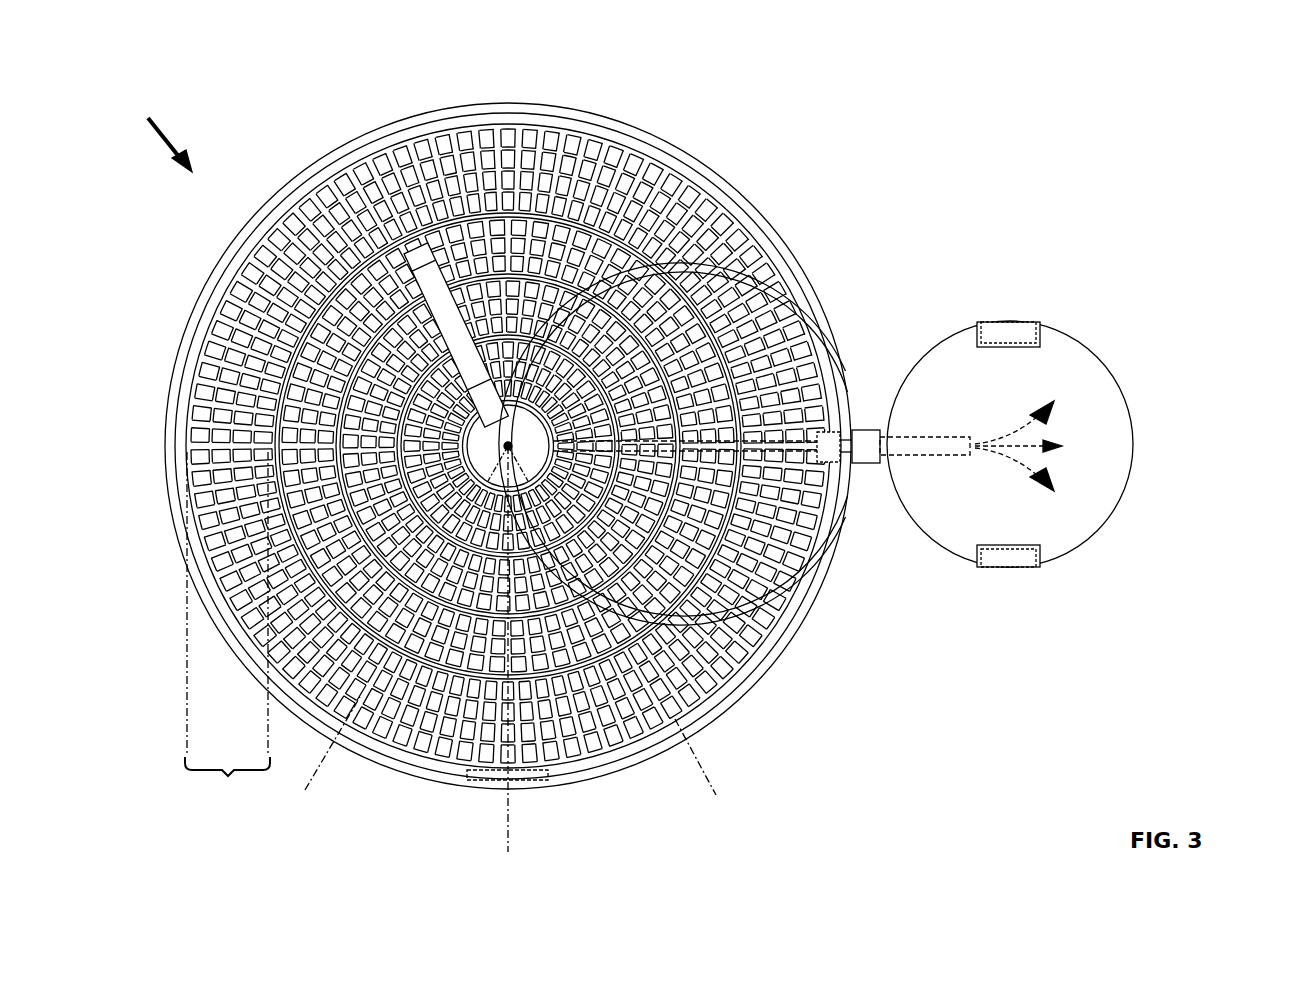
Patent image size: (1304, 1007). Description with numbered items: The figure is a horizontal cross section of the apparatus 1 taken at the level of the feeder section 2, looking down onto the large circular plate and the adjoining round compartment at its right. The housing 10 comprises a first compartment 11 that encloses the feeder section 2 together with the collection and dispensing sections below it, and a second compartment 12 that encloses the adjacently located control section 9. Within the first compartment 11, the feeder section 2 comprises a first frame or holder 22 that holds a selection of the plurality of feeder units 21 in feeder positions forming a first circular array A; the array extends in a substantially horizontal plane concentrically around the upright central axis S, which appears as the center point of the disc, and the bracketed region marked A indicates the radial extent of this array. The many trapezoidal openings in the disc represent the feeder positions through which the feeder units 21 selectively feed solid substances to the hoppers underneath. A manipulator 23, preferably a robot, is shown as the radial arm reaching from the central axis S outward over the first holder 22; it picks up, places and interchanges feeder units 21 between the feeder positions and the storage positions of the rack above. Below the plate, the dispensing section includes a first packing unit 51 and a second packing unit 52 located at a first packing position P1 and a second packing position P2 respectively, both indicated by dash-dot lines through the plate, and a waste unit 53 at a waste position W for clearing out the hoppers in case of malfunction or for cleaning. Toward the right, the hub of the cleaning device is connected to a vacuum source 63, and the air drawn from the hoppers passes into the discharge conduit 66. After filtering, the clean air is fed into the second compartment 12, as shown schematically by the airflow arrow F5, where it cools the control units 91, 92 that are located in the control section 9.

The apparatus 1 is at (163, 125).
The feeder section 2 is at (664, 314).
The control section 9 is at (1167, 451).
The housing 10 is at (318, 162).
The first compartment 11 is at (207, 288).
The second compartment 12 is at (968, 264).
The feeder units 21 is at (760, 238).
The first holder 22 is at (690, 208).
The manipulator 23 is at (440, 290).
The first packing unit 51 is at (593, 623).
The second packing unit 52 is at (485, 778).
The waste unit 53 is at (705, 710).
The vacuum source 63 is at (868, 465).
The discharge conduit 66 is at (930, 440).
The control unit 91 is at (1005, 562).
The control unit 92 is at (1012, 332).
The central axis S is at (508, 446).
The first circular array A is at (227, 632).
The waste position W is at (710, 765).
The first packing position P1 is at (325, 758).
The second packing position P2 is at (528, 653).
The airflow arrow F5 is at (1018, 442).